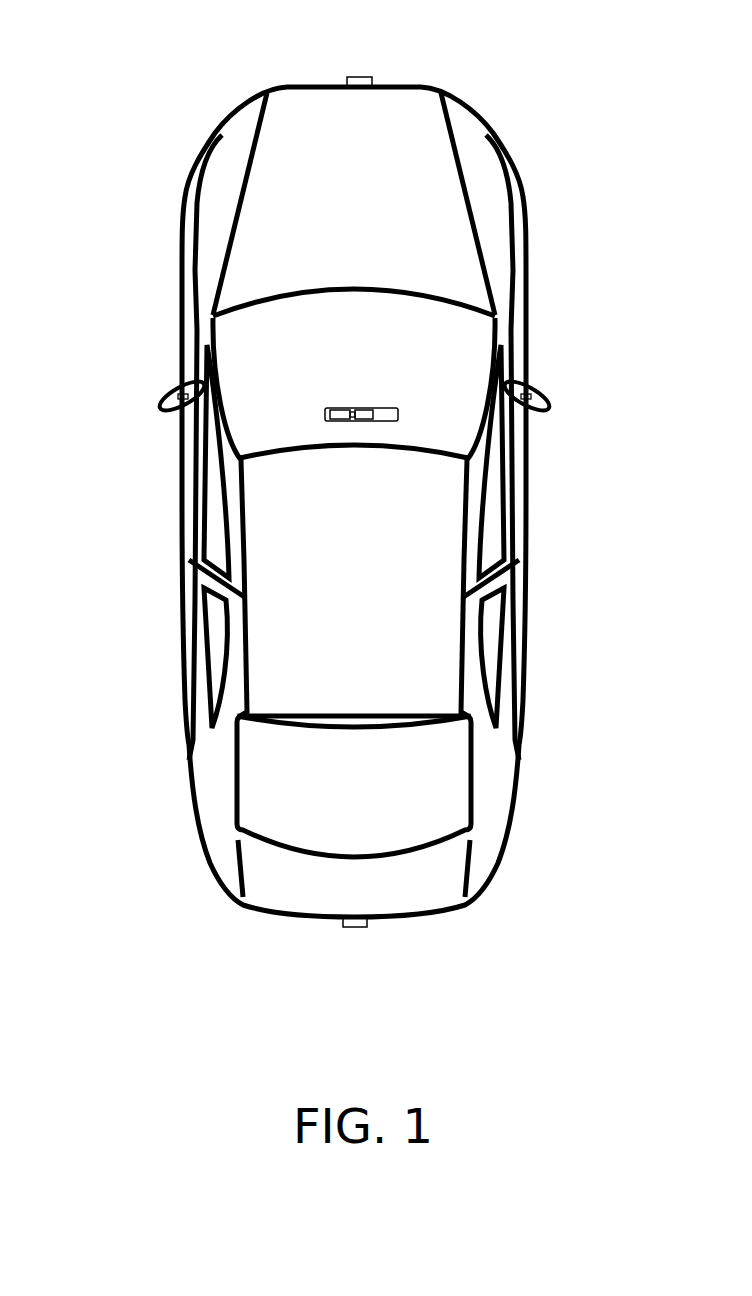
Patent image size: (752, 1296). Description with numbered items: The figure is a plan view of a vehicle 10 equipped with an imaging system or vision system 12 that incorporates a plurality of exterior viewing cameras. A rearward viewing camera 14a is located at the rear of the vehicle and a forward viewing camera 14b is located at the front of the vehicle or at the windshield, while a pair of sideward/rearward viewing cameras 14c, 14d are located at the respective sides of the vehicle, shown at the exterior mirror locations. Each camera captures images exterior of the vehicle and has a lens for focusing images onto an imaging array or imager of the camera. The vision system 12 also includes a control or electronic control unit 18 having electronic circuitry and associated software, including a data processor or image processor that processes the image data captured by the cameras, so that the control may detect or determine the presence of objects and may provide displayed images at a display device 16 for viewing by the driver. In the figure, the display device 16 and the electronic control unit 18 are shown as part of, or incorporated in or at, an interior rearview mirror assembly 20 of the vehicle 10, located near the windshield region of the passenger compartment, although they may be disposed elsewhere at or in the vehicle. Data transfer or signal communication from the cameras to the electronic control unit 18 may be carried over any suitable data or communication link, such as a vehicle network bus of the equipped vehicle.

The vehicle 10 is at (118, 93).
The vision system 12 is at (317, 933).
The rearward viewing camera 14a is at (363, 927).
The forward viewing camera 14b is at (363, 77).
The sideward/rearward viewing camera 14c is at (163, 390).
The sideward/rearward viewing camera 14d is at (543, 390).
The display device 16 is at (342, 410).
The electronic control unit 18 is at (362, 410).
The interior rearview mirror assembly 20 is at (400, 410).